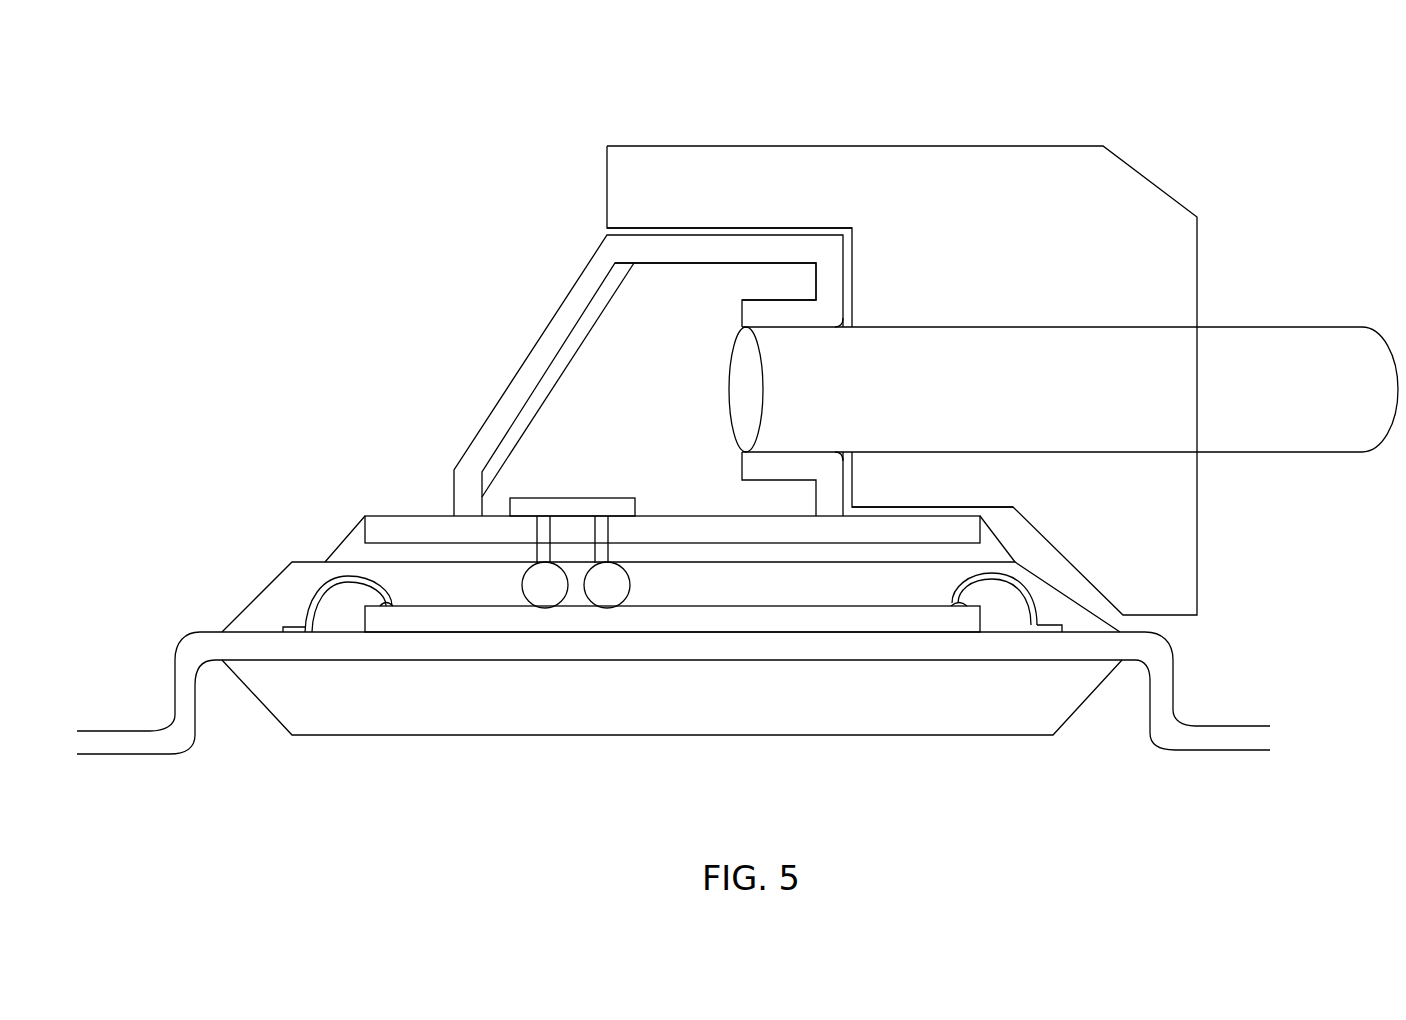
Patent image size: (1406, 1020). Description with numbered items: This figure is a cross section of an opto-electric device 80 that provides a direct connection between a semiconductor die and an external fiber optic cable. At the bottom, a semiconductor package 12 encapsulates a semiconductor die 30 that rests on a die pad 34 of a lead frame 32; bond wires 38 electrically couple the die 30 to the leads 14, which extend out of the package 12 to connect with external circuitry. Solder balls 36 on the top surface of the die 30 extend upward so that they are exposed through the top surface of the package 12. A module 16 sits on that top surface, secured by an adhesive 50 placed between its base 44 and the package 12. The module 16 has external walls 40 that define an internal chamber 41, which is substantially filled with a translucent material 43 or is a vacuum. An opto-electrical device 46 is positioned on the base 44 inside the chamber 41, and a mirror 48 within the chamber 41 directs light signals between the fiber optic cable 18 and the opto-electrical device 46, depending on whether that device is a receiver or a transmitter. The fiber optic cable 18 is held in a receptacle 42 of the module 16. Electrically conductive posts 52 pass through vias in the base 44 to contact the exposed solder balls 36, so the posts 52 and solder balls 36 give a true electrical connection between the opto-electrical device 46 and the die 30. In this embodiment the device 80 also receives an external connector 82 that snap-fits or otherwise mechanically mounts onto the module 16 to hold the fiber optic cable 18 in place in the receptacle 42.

The semiconductor package 12 is at (672, 648).
The leads 14 is at (175, 685).
The module 16 is at (754, 215).
The fiber optic cable 18 is at (1063, 389).
The semiconductor die 30 is at (672, 620).
The lead frame 32 is at (671, 648).
The die pad 34 is at (672, 650).
The solder balls 36 is at (576, 585).
The bond wires 38 is at (327, 583).
The external walls 40 is at (833, 291).
The internal chamber 41 is at (671, 292).
The receptacle 42 is at (856, 311).
The translucent material 43 is at (649, 405).
The base 44 is at (963, 523).
The opto-electrical device 46 is at (577, 497).
The mirror 48 is at (597, 322).
The adhesive 50 is at (343, 543).
The electrically conductive posts 52 is at (535, 533).
The device 80 is at (466, 797).
The external connector 82 is at (997, 172).